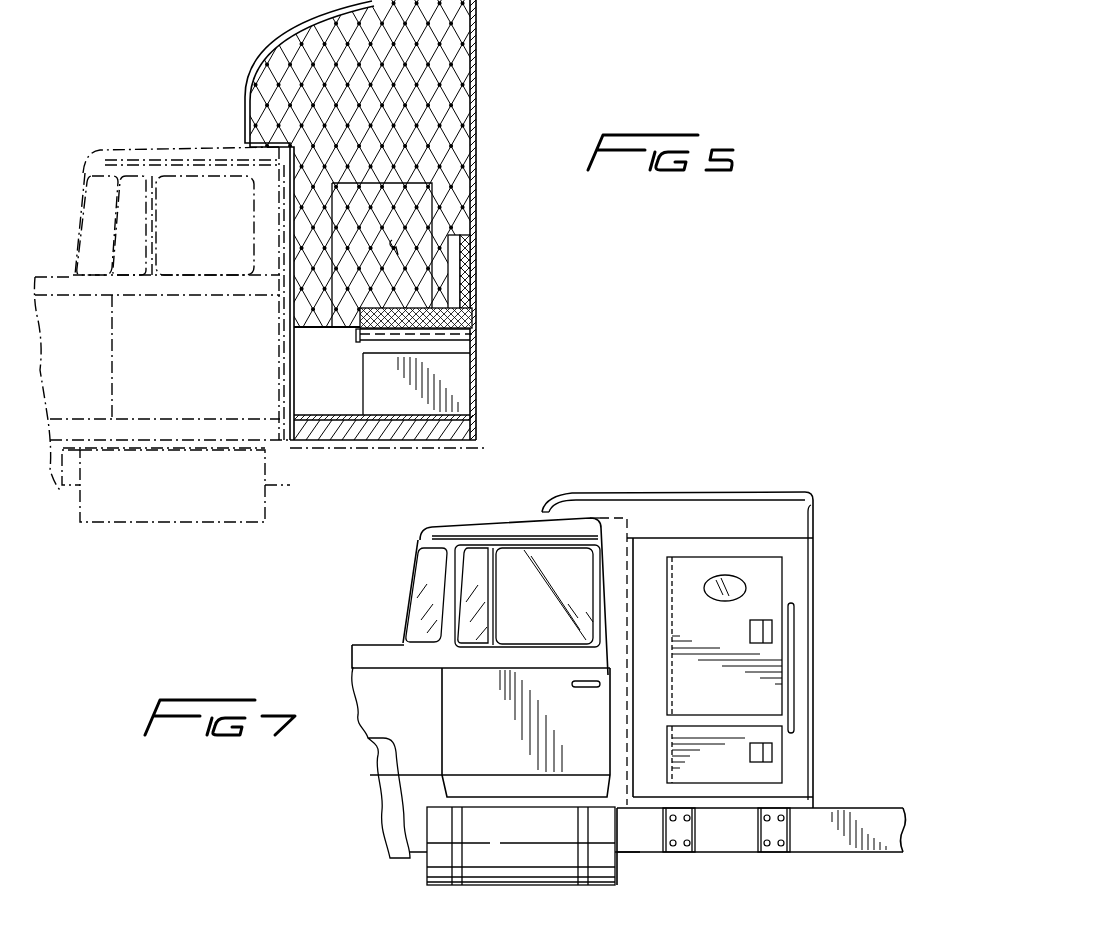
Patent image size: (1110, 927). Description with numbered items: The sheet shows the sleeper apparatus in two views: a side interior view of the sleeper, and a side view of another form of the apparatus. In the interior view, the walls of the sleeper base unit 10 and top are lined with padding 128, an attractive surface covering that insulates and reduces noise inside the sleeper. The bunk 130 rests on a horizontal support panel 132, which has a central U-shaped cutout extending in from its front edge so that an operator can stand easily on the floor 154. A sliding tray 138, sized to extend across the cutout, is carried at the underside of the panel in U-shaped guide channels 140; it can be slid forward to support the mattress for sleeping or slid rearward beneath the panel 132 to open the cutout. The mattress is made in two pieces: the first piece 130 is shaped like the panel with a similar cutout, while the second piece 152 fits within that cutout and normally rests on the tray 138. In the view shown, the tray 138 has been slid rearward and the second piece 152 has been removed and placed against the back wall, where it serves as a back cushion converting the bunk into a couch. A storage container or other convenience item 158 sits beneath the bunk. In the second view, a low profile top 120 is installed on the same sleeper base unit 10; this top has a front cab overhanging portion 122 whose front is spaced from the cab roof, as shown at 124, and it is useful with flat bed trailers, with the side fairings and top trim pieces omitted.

In FIG. 7, the sleeper base unit 10 is at (799, 658).
In FIG. 7, the low profile top 120 is at (705, 512).
In FIG. 7, the front cab overhanging portion 122 is at (598, 493).
In FIG. 7, the spacing from cab roof 124 is at (545, 512).
In FIG. 5, the padding 128 is at (432, 62).
In FIG. 5, the bunk 130 is at (455, 319).
In FIG. 5, the horizontal support panel 132 is at (305, 330).
In FIG. 5, the sliding tray 138 is at (355, 341).
In FIG. 5, the U-shaped guide channels 140 is at (432, 341).
In FIG. 5, the second piece of mattress 152 is at (453, 262).
In FIG. 5, the floor 154 is at (316, 414).
In FIG. 5, the storage container 158 is at (460, 386).